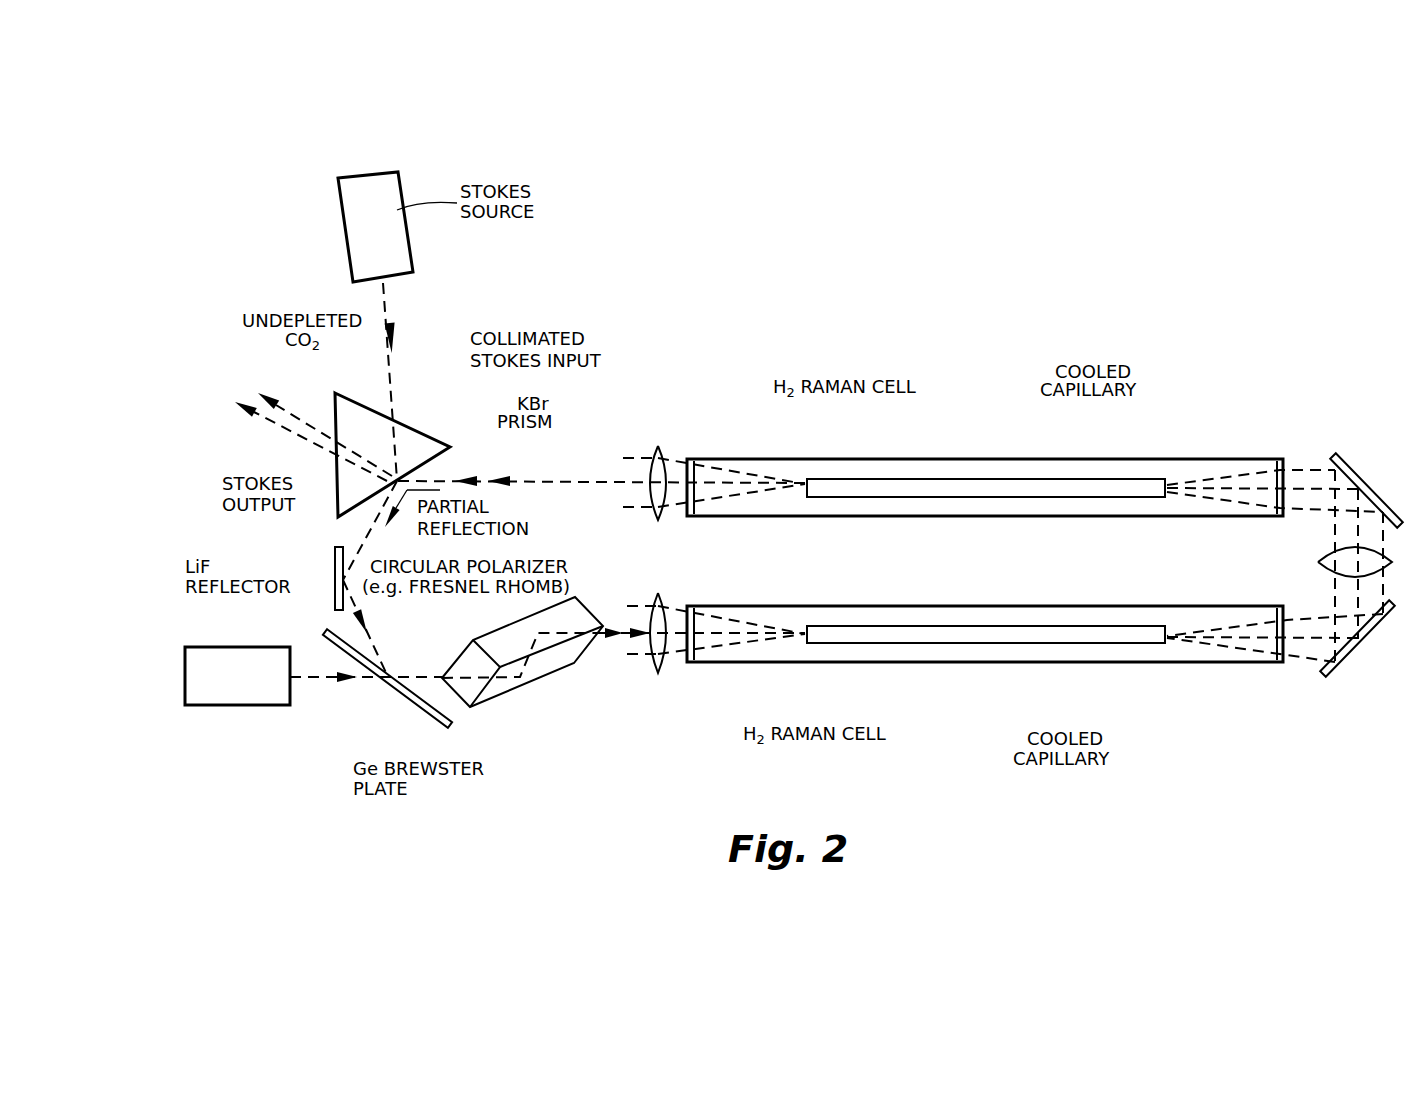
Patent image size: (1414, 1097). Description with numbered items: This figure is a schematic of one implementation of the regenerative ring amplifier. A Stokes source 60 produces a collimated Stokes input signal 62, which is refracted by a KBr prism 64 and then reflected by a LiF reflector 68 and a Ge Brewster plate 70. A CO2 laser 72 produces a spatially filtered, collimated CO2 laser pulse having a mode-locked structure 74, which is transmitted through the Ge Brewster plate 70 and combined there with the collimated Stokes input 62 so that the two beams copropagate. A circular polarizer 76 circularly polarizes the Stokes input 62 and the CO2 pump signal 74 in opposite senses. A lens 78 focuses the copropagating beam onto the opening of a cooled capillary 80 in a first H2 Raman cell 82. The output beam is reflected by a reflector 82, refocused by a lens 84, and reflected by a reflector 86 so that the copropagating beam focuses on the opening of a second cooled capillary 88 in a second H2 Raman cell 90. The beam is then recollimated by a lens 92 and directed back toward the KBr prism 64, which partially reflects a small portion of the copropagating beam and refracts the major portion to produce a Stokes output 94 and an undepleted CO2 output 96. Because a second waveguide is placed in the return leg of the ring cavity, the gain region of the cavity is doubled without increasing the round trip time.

The Stokes source 60 is at (388, 239).
The collimated Stokes input signal 62 is at (397, 360).
The KBr prism 64 is at (417, 430).
The LiF reflector 68 is at (334, 563).
The Ge Brewster plate 70 is at (422, 713).
The CO2 laser 72 is at (248, 707).
The CO2 laser pulse 74 is at (320, 680).
The circular polarizer 76 is at (490, 630).
The lens 78 is at (660, 594).
The cooled capillary 80 is at (1098, 645).
The H2 Raman cell / reflector 82 is at (1347, 655).
The lens 84 is at (1318, 557).
The reflector 86 is at (1352, 470).
The cooled capillary 88 is at (1043, 479).
The H2 Raman cell 90 is at (800, 458).
The lens 92 is at (660, 447).
The Stokes output 94 is at (282, 428).
The undepleted CO2 output 96 is at (290, 418).